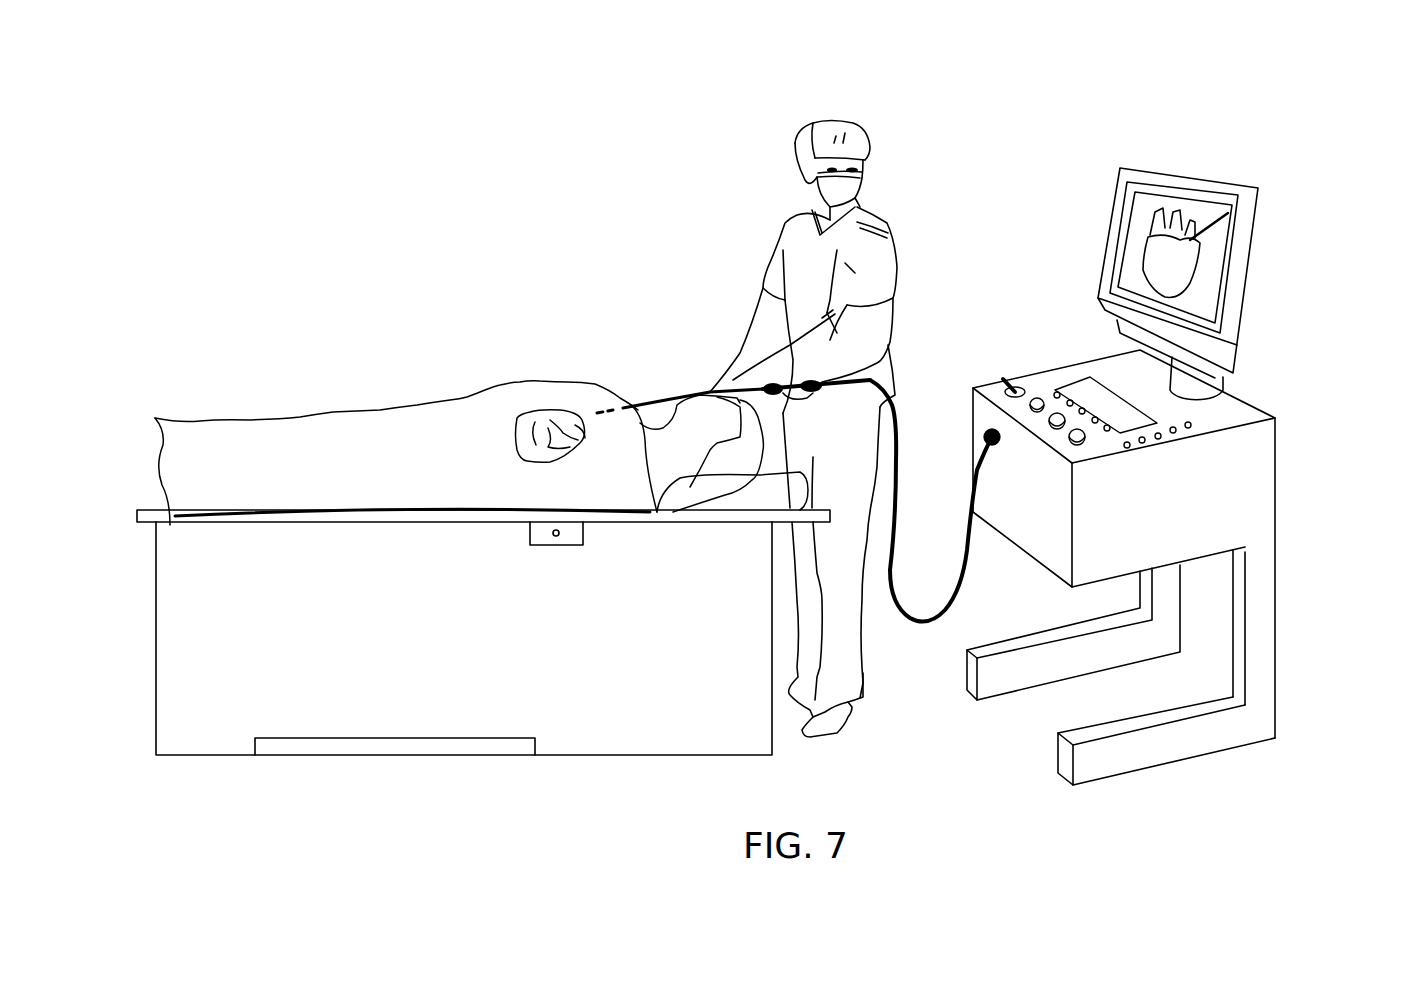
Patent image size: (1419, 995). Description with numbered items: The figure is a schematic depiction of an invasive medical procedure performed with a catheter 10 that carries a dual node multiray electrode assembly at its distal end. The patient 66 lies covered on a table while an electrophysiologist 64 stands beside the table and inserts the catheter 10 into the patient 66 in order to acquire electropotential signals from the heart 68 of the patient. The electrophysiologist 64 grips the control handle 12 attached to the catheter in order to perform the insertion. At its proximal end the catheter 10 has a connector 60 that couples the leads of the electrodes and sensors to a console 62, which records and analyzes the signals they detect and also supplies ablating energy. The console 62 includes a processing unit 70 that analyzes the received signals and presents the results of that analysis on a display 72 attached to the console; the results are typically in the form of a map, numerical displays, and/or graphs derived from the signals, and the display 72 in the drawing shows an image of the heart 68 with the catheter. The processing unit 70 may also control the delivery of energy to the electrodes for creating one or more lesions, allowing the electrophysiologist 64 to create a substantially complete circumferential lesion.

The catheter 10 is at (652, 398).
The control handle 12 is at (860, 377).
The connector 60 is at (987, 394).
The console 62 is at (1275, 468).
The electrophysiologist 64 is at (833, 125).
The patient 66 is at (248, 432).
The heart 68 is at (537, 410).
The processing unit 70 is at (1317, 517).
The display 72 is at (1250, 250).